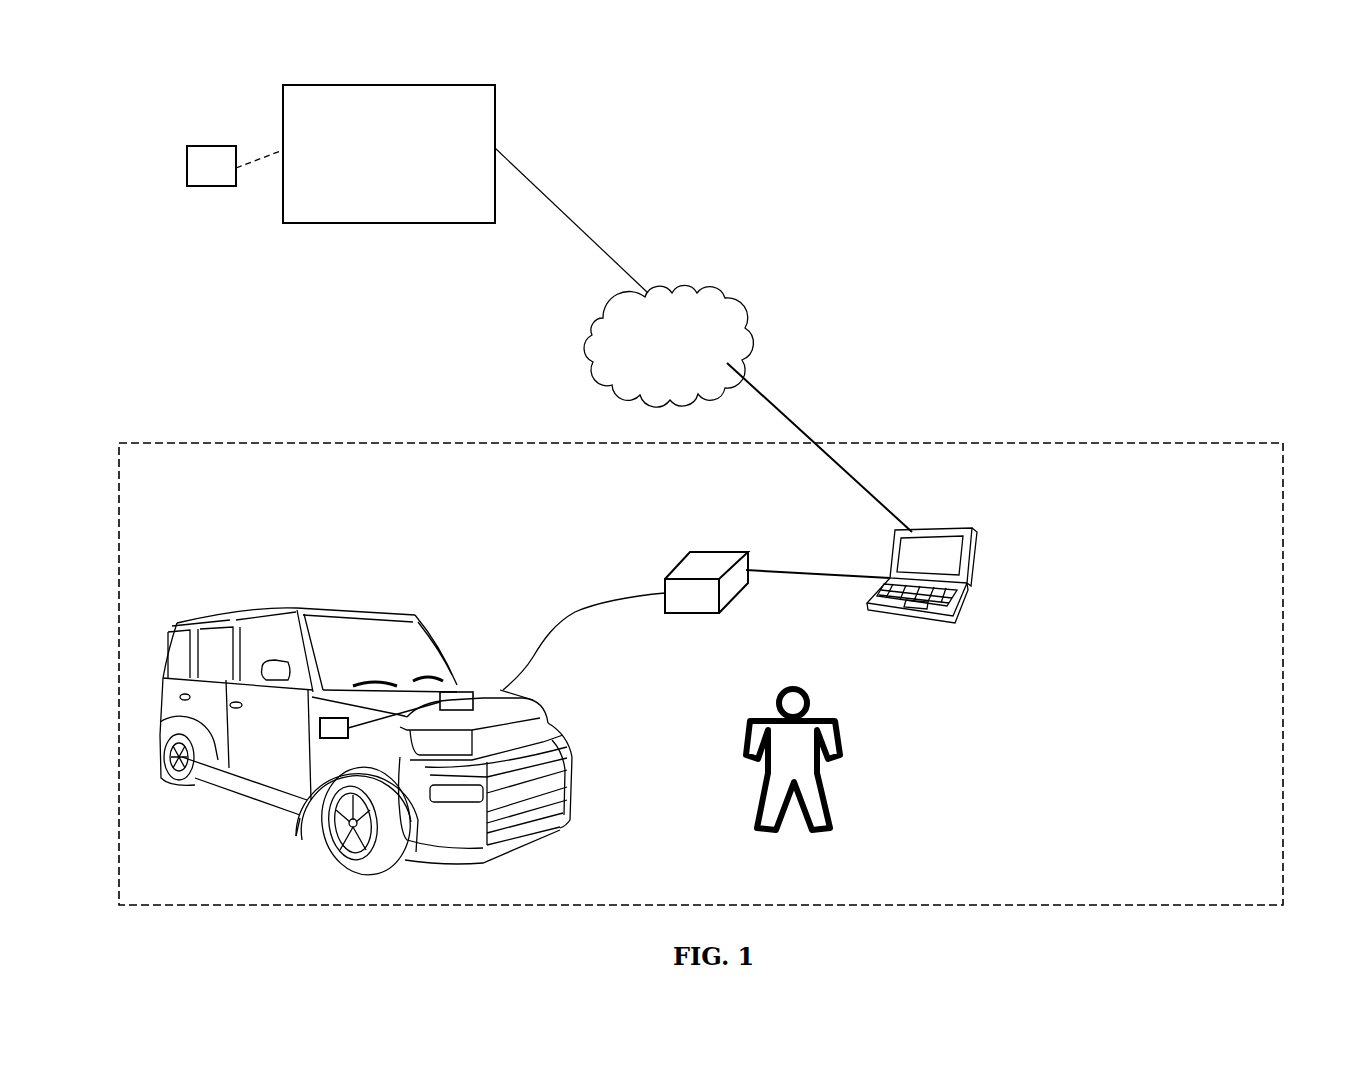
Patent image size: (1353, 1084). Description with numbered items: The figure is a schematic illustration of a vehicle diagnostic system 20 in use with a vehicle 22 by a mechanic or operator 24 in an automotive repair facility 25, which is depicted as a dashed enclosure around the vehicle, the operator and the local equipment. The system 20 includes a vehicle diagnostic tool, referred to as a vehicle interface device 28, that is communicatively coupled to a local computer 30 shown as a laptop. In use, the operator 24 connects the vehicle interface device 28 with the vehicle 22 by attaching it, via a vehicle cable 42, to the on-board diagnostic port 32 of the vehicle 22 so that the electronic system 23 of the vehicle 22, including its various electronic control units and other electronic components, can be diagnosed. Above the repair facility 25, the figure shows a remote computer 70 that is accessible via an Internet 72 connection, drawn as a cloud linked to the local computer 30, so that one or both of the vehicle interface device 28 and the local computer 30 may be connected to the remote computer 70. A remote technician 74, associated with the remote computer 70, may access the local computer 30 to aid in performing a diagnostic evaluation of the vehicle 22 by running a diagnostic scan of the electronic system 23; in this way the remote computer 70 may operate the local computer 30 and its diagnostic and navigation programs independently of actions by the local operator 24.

The vehicle diagnostic system 20 is at (990, 678).
The vehicle 22 is at (325, 607).
The electronic system 23 is at (327, 738).
The operator 24 is at (827, 720).
The automotive repair facility 25 is at (338, 440).
The vehicle interface device 28 is at (683, 550).
The local computer 30 is at (972, 562).
The OBD diagnostic port 32 is at (470, 686).
The vehicle cable 42 is at (592, 605).
The remote computer 70 is at (397, 85).
The Internet 72 is at (725, 293).
The remote technician 74 is at (206, 146).